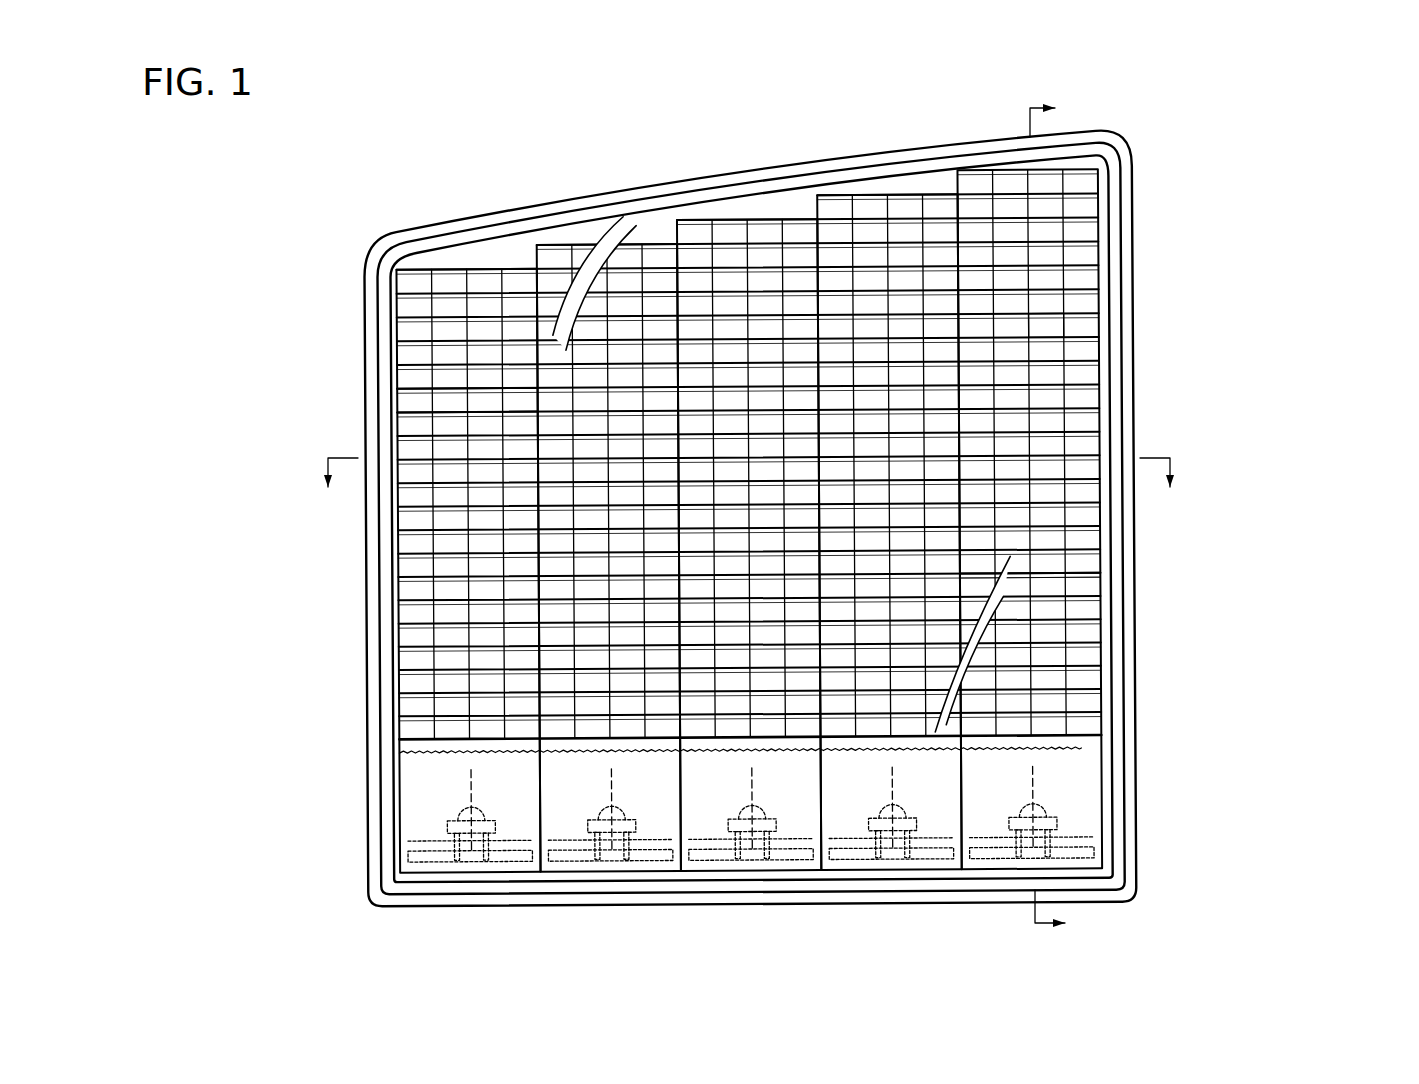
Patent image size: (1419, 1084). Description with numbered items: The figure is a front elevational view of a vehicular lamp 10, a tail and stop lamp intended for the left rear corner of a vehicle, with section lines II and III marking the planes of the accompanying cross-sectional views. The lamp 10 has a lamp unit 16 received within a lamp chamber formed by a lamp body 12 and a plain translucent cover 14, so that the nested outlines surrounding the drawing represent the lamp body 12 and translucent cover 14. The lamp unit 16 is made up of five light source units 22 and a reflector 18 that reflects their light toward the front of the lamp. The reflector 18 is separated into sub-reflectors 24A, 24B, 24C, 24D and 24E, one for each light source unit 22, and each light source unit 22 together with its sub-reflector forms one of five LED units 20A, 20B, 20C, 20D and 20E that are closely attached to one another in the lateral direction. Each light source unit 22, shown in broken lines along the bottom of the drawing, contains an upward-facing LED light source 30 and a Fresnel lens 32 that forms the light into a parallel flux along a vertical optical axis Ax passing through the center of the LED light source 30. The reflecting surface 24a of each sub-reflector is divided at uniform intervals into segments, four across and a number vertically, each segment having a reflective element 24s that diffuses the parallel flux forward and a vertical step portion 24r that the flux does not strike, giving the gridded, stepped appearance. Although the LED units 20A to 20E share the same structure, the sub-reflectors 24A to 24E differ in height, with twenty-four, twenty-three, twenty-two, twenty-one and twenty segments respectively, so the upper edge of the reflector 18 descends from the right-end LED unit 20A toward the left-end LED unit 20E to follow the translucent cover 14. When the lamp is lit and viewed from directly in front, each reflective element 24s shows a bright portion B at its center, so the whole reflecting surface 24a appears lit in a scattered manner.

The vehicular lamp 10 is at (768, 517).
The lamp body 12 is at (862, 518).
The translucent cover 14 is at (1138, 382).
The lamp unit 16 is at (699, 494).
The reflector 18 is at (699, 494).
The LED unit 20A is at (907, 493).
The LED unit 20B is at (768, 508).
The LED unit 20C is at (628, 521).
The LED unit 20D is at (486, 534).
The LED unit 20E is at (344, 546).
The light source unit 22 is at (741, 765).
The sub-reflector 24A is at (953, 181).
The sub-reflector 24B is at (815, 208).
The sub-reflector 24C is at (668, 230).
The sub-reflector 24D is at (537, 255).
The sub-reflector 24E is at (397, 283).
The reflecting surface 24a is at (1048, 328).
The reflective element 24s is at (1105, 572).
The step portion 24r is at (1097, 582).
The LED light source 30 is at (1043, 803).
The Fresnel lens 32 is at (1036, 748).
The optical axis Ax is at (1033, 787).
The bright portion B is at (413, 413).
The section line II- II is at (755, 492).
The section line III- III is at (1077, 517).